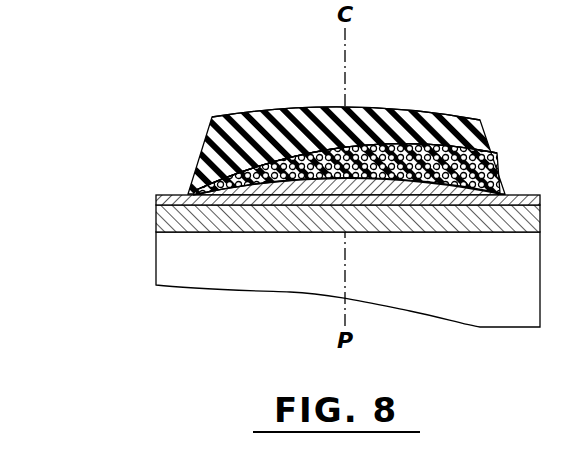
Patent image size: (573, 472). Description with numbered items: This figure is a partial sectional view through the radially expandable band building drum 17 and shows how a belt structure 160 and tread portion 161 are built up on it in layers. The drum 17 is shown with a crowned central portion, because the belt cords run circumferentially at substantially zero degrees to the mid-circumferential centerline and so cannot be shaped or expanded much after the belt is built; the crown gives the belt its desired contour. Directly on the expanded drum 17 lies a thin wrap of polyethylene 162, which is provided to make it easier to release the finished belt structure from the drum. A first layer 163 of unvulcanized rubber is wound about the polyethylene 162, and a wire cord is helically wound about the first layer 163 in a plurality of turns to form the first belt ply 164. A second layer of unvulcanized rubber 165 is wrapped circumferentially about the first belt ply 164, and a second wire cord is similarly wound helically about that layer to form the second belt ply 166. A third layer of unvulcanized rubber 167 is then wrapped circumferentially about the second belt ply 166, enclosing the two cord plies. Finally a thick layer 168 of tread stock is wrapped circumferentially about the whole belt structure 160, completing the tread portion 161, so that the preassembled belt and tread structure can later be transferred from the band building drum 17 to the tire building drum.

The band building drum 17 is at (227, 238).
The belt structure 160 is at (448, 148).
The tread portion 161 is at (300, 113).
The thin wrap of polyethylene 162 is at (163, 192).
The first layer of unvulcanized rubber 163 is at (197, 170).
The first belt ply 164 is at (203, 155).
The second layer of unvulcanized rubber 165 is at (472, 168).
The second belt ply 166 is at (462, 162).
The third layer of unvulcanized rubber 167 is at (423, 147).
The thick layer of tread stock 168 is at (378, 110).